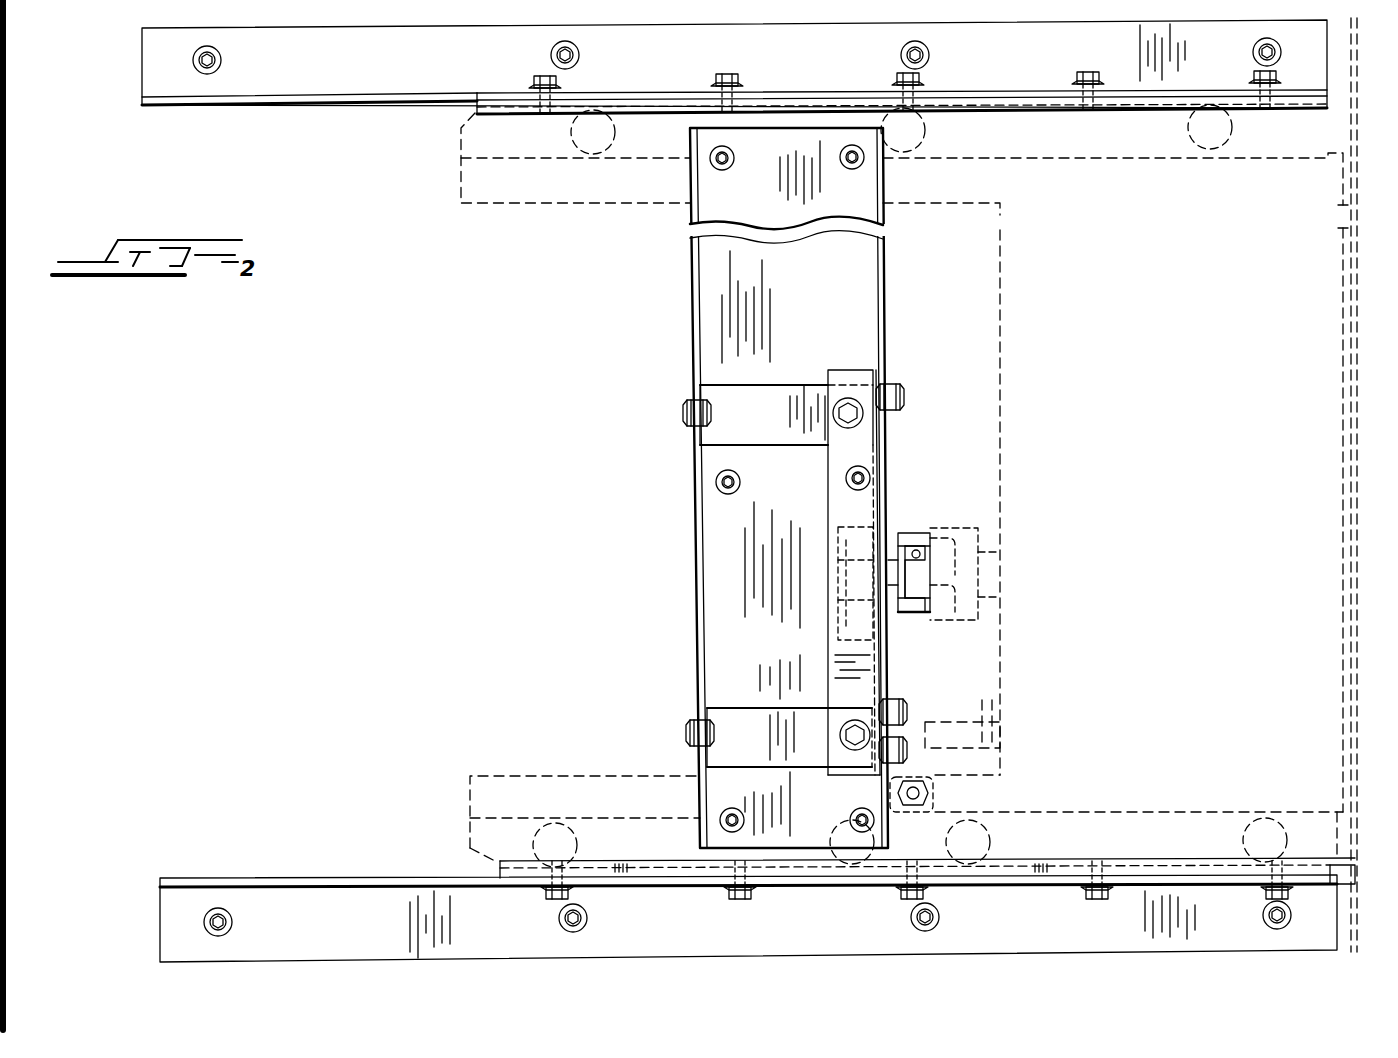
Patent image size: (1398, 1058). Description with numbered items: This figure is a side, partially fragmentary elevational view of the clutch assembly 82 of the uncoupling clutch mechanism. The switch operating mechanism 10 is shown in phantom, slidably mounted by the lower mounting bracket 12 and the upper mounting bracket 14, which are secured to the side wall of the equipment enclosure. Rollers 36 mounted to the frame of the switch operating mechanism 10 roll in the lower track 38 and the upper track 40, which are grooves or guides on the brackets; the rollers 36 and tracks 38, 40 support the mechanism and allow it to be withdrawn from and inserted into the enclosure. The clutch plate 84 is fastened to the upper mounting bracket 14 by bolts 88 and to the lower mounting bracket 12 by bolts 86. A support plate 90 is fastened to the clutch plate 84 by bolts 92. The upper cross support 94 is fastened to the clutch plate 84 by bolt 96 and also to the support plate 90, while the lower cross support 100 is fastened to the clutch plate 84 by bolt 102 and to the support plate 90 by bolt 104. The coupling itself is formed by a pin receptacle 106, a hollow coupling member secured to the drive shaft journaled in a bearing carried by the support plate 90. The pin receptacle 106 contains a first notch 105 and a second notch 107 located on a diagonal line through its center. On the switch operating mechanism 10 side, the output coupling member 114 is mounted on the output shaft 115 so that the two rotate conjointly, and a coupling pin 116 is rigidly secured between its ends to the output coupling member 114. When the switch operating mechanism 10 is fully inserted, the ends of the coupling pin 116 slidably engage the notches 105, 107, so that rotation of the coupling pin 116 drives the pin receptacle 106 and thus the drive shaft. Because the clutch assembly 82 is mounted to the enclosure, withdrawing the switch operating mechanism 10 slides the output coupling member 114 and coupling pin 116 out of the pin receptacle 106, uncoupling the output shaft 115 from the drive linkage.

The switch operating mechanism 10 is at (1310, 352).
The lower mounting bracket 12 is at (272, 877).
The upper mounting bracket 14 is at (317, 77).
The rollers 36 is at (597, 154).
The lower track 38 is at (1138, 868).
The upper track 40 is at (955, 90).
The clutch assembly 82 is at (857, 488).
The clutch plate 84 is at (692, 333).
The bolts 86 is at (746, 820).
The bolts 88 is at (840, 153).
The support plate 90 is at (875, 508).
The bolts 92 is at (903, 394).
The upper cross support 94 is at (800, 385).
The bolt 96 is at (684, 430).
The lower cross support 100 is at (730, 708).
The bolt 102 is at (684, 737).
The bolt 104 is at (848, 724).
The first notch 105 is at (917, 548).
The pin receptacle 106 is at (912, 533).
The second notch 107 is at (930, 613).
The output coupling member 114 is at (965, 570).
The output shaft 115 is at (985, 598).
The coupling pin 116 is at (920, 553).